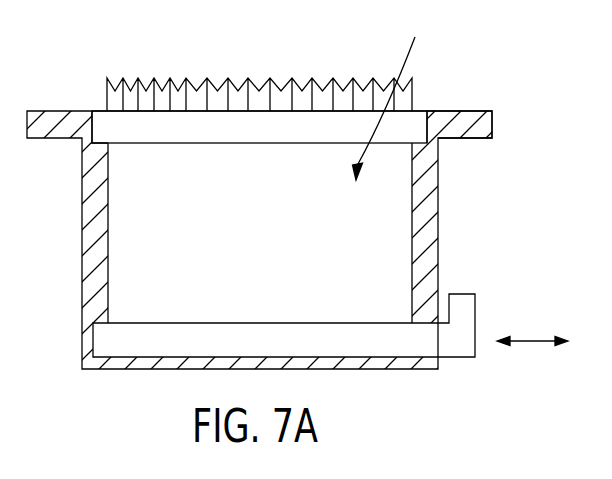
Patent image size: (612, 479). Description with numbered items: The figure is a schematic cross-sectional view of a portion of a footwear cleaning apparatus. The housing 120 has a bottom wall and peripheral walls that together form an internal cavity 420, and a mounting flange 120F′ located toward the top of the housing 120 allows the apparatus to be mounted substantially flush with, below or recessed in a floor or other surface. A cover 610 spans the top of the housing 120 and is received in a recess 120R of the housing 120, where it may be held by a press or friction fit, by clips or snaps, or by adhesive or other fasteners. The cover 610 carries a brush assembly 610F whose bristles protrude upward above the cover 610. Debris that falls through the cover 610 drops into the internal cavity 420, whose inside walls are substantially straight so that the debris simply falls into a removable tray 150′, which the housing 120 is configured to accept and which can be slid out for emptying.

The housing 120 is at (90, 212).
The mounting flange 120F′ is at (468, 111).
The recess 120R is at (92, 125).
The cover 610 is at (155, 127).
The brush assembly 610F is at (293, 78).
The internal cavity 420 is at (391, 97).
The removable tray 150′ is at (465, 331).